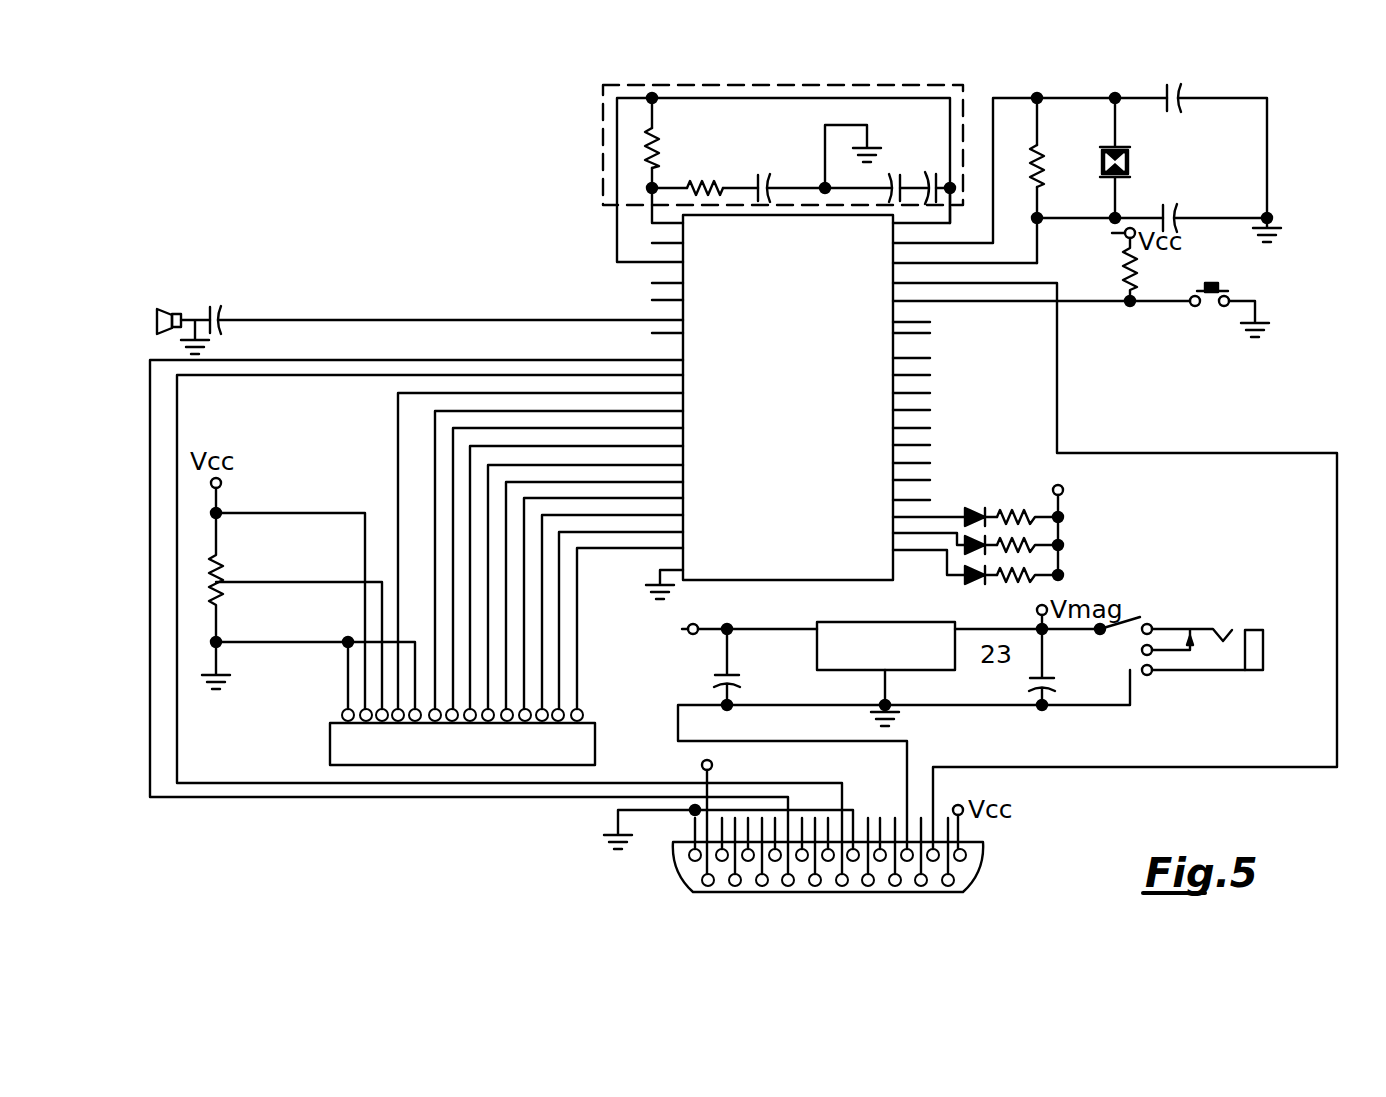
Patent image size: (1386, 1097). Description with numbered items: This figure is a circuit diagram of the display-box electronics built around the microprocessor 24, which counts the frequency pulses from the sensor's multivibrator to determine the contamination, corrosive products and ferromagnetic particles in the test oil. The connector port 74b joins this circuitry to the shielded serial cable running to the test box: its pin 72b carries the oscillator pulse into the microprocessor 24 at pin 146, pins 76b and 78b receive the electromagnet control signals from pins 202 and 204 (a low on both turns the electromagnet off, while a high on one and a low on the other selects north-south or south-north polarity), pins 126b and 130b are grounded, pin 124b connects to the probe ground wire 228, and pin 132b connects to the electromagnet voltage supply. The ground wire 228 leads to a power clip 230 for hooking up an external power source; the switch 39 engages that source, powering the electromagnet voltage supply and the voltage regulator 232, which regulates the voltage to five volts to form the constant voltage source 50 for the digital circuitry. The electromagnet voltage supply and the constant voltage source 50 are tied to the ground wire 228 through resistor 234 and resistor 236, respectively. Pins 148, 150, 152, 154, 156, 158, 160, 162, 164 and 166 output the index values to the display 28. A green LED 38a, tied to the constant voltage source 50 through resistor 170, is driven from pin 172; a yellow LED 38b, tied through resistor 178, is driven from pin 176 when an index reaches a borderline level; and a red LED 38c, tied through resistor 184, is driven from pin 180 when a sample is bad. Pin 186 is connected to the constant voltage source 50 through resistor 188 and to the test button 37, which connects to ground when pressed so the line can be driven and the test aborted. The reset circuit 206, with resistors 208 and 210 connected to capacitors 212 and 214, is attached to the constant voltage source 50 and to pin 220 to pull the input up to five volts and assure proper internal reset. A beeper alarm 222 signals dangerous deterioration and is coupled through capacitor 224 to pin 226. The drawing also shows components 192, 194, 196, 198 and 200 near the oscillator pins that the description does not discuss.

The microprocessor 24 is at (800, 582).
The reset circuit 206 is at (603, 127).
The resistor 208 is at (663, 153).
The resistor 210 is at (706, 180).
The capacitor 212 is at (762, 173).
The capacitor 214 is at (893, 172).
The pin 220 is at (935, 178).
The VCC connection 192 is at (930, 242).
The pin 146 is at (972, 263).
The resistor 196 is at (1048, 162).
The crystal 194 is at (1135, 160).
The capacitor 198 is at (1185, 108).
The capacitor 200 is at (1180, 210).
The constant voltage source 50 is at (890, 432).
The resistor 188 is at (1123, 268).
The pin 186 is at (938, 303).
The test button 37 is at (1222, 283).
The beeper alarm 222 is at (162, 310).
The capacitor 224 is at (219, 312).
The pin 226 is at (650, 318).
The pin 202 is at (645, 360).
The pin 204 is at (557, 375).
The pin 148 is at (668, 393).
The pin 150 is at (668, 411).
The pin 152 is at (668, 428).
The pin 154 is at (668, 446).
The pin 156 is at (668, 465).
The pin 158 is at (668, 482).
The pin 160 is at (668, 498).
The pin 162 is at (668, 515).
The pin 164 is at (625, 533).
The pin 166 is at (648, 549).
The display 28 is at (330, 733).
The pin 180 is at (922, 517).
The pin 176 is at (905, 555).
The pin 172 is at (925, 560).
The green LED 38a is at (972, 582).
The yellow LED 38b is at (990, 527).
The red LED 38c is at (975, 510).
The resistor 184 is at (1062, 520).
The resistor 178 is at (1062, 547).
The resistor 170 is at (1062, 578).
The voltage regulator 232 is at (815, 643).
The resistor 236 is at (712, 682).
The probe ground wire 228 is at (785, 741).
The resistor 234 is at (1058, 688).
The switch 39 is at (1130, 617).
The power clip 230 is at (1252, 628).
The pin 72b is at (950, 884).
The pin 132b is at (703, 776).
The pin 130b is at (688, 823).
The connector port 74b is at (687, 884).
The pin 78b is at (787, 888).
The pin 76b is at (842, 888).
The pin 126b is at (855, 862).
The pin 124b is at (905, 862).